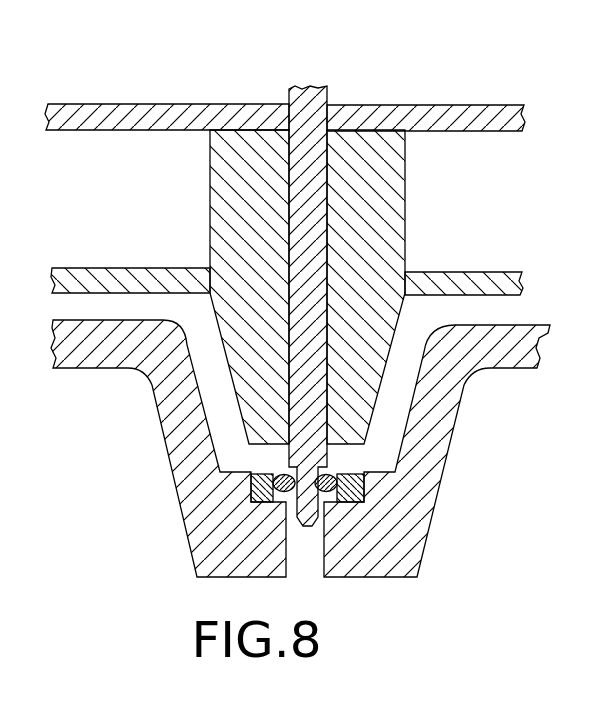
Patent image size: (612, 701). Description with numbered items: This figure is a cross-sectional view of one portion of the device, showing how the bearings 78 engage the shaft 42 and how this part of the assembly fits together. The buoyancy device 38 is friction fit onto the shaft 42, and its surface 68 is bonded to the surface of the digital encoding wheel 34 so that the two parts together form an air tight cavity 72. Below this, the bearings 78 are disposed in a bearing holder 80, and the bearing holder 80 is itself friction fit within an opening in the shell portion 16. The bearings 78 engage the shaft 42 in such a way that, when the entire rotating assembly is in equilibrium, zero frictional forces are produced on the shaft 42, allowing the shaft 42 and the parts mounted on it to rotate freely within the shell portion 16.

The shell portion 16 is at (413, 530).
The digital encoding wheel 34 is at (432, 106).
The buoyancy device 38 is at (488, 237).
The shaft 42 is at (318, 90).
The surface 68 is at (234, 128).
The air tight cavity 72 is at (158, 202).
The bearings 78 is at (280, 473).
The bearing holder 80 is at (255, 492).